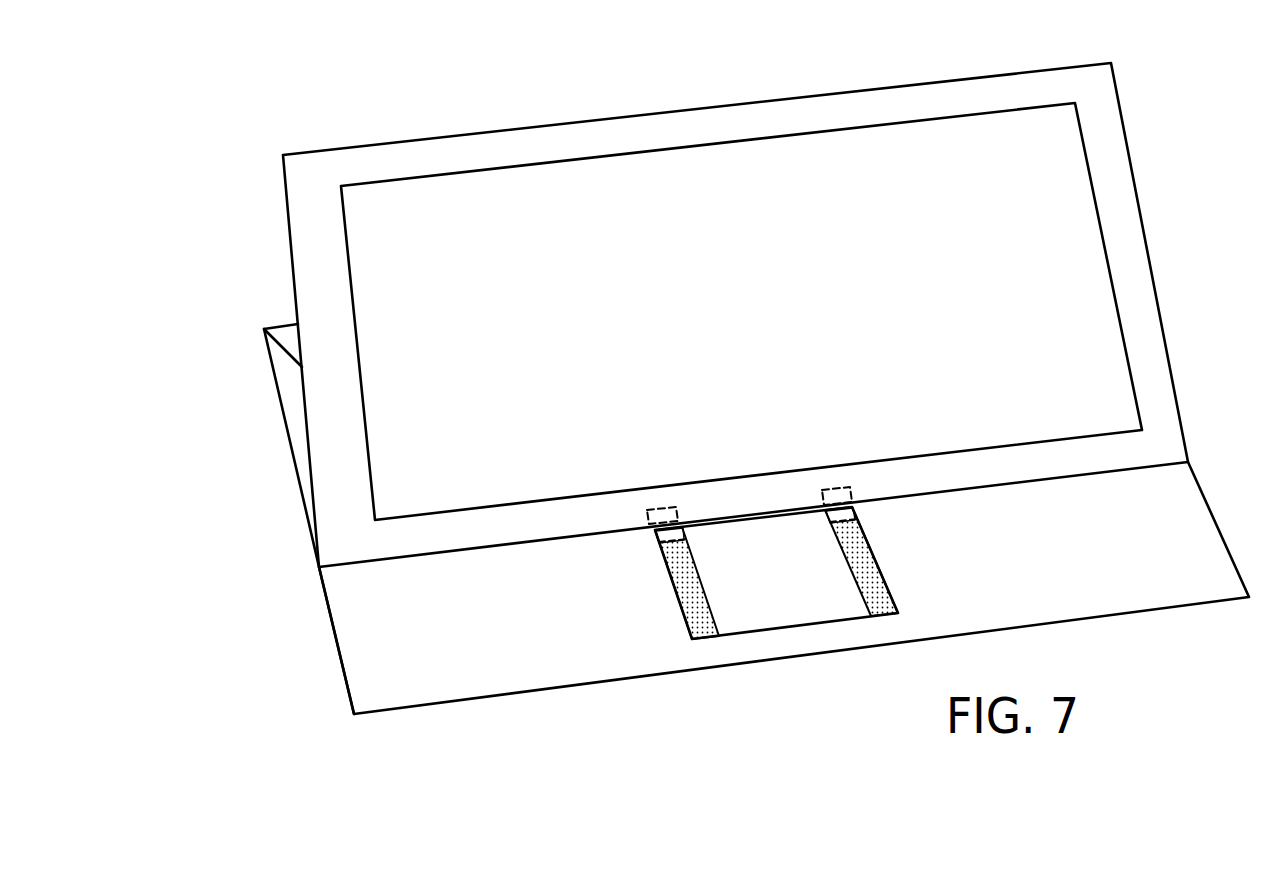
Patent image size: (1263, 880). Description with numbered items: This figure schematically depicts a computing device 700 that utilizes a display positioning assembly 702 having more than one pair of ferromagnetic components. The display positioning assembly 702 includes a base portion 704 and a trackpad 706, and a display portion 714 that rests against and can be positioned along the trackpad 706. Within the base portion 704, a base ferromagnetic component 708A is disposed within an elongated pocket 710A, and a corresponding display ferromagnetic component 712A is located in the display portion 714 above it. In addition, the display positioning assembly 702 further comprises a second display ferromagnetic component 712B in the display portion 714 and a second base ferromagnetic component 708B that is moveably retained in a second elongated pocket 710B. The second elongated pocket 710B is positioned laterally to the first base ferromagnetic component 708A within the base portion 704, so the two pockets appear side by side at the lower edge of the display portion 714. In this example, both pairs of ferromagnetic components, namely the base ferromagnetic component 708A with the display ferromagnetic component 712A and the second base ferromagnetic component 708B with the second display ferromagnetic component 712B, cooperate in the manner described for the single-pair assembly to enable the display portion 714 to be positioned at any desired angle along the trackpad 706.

The computing device 700 is at (360, 84).
The display positioning assembly 702 is at (243, 592).
The base portion 704 is at (342, 677).
The trackpad 706 is at (777, 630).
The base ferromagnetic component 708A is at (653, 537).
The second base ferromagnetic component 708B is at (852, 510).
The elongated pocket 710A is at (675, 597).
The second elongated pocket 710B is at (877, 573).
The display ferromagnetic component 712A is at (664, 505).
The second display ferromagnetic component 712B is at (837, 488).
The display portion 714 is at (1160, 308).